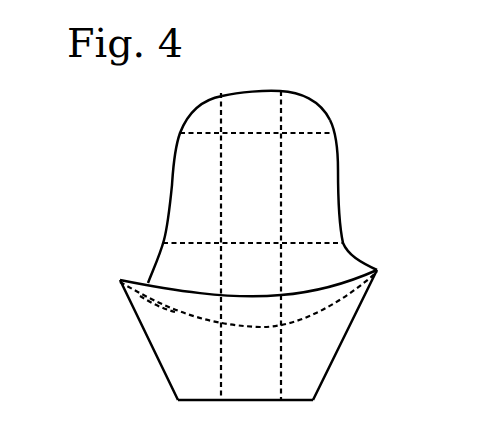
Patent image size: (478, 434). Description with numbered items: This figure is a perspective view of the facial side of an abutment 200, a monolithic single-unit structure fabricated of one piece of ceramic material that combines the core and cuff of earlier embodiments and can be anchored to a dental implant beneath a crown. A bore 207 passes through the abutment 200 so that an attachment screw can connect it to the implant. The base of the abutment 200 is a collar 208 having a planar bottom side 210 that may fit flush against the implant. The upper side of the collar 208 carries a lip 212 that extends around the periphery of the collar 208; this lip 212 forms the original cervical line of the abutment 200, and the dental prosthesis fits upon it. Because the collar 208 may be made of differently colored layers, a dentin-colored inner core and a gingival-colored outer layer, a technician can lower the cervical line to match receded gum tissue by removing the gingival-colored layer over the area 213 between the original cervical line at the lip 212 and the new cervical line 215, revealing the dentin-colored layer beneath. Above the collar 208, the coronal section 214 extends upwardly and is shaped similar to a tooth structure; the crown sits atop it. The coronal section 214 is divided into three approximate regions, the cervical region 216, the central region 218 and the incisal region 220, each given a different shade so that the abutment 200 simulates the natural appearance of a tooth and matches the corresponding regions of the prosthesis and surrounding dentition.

The abutment 200 is at (281, 60).
The bore 207 is at (281, 177).
The collar 208 is at (387, 329).
The planar bottom side 210 is at (178, 400).
The lip 212 is at (137, 280).
The area 213 is at (293, 307).
The coronal section 214 is at (166, 160).
The new cervical line 215 is at (175, 312).
The cervical region 216 is at (170, 268).
The central region 218 is at (313, 202).
The incisal region 220 is at (302, 106).